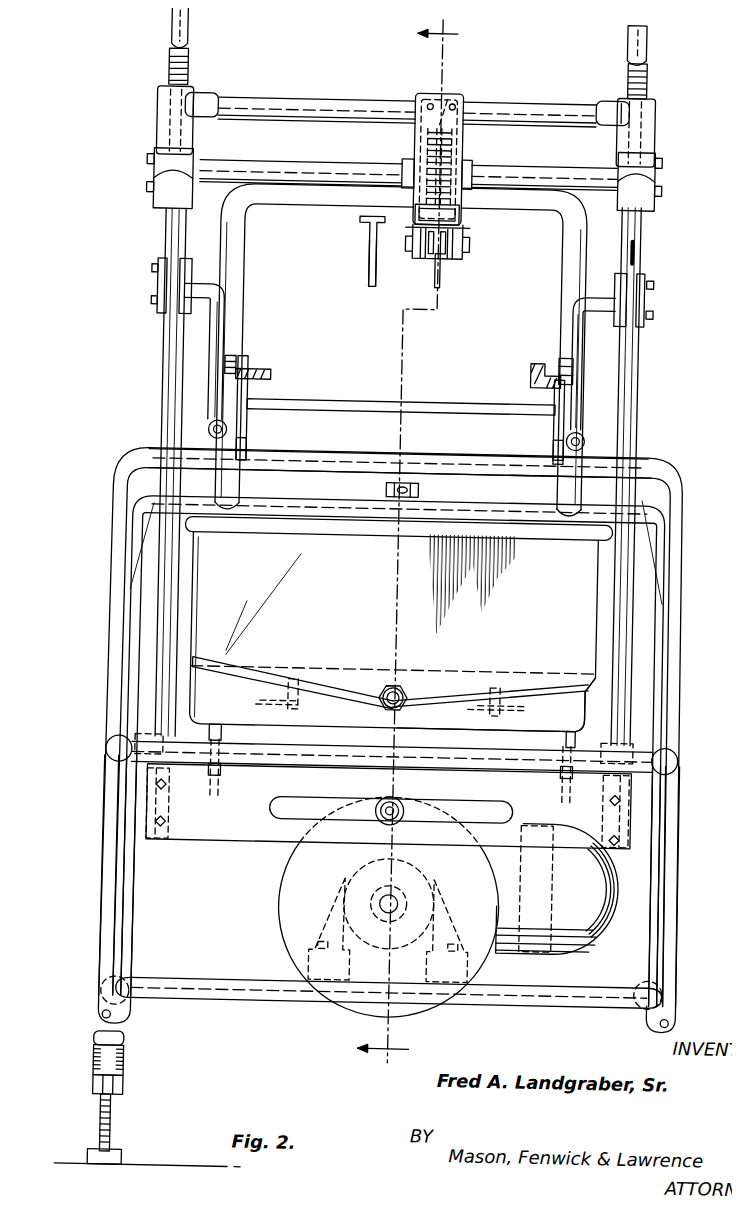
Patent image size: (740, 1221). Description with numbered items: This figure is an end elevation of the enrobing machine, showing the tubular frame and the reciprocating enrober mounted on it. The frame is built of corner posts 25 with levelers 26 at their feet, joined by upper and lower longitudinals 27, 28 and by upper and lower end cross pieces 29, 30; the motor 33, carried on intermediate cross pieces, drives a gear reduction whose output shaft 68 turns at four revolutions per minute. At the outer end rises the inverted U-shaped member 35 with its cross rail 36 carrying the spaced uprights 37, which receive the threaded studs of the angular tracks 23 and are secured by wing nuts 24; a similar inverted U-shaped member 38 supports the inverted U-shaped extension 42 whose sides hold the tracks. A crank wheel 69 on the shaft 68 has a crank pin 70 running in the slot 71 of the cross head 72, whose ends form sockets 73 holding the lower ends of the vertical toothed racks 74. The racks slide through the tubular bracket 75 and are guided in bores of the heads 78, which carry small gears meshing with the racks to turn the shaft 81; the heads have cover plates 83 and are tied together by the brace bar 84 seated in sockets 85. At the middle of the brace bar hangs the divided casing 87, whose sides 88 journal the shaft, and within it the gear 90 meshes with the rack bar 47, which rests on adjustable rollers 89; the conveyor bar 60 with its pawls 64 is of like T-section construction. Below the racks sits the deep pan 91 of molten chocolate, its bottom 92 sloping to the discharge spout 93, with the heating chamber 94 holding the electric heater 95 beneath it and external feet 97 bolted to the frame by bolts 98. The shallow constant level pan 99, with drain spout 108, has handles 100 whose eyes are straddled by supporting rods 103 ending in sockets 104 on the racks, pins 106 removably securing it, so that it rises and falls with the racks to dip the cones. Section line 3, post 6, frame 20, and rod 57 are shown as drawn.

The section line 3- 3 is at (397, 546).
The upright post 6 is at (640, 41).
The frame 20 is at (147, 951).
The angular tracks 23 is at (258, 371).
The wing nuts 24 is at (231, 353).
The corner posts 25 is at (105, 926).
The levelers 26 is at (122, 1133).
The upper longitudinals 27 is at (112, 769).
The lower longitudinals 28 is at (110, 995).
The upper end cross pieces 29 is at (520, 767).
The lower end cross pieces 30 is at (238, 984).
The motor 33 is at (597, 886).
The inverted U-shaped member 35 is at (108, 587).
The cross rail 36 is at (348, 452).
The uprights 37 is at (245, 393).
The inverted U-shaped member 38 is at (568, 776).
The inverted U-shaped extension 42 is at (237, 262).
The rack bar 47 is at (462, 228).
The rod 57 is at (428, 285).
The conveyor bar 60 is at (356, 222).
The unidirectionally swinging pawls 64 is at (362, 278).
The output shaft 68 is at (396, 900).
The crank wheel 69 is at (287, 902).
The crank pin 70 is at (398, 803).
The slot 71 is at (309, 817).
The cross head 72 is at (212, 844).
The sockets 73 is at (387, 821).
The toothed racks 74 is at (157, 72).
The tubular bracket 75 is at (150, 740).
The heads 78 is at (147, 110).
The shaft 81 is at (536, 166).
The cover plates 83 is at (145, 171).
The brace bar 84 is at (522, 100).
The sockets 85 is at (202, 97).
The divided casing 87 is at (446, 94).
The sides of the casing 88 is at (454, 149).
The adjustable rollers 89 is at (445, 249).
The gear 90 is at (452, 118).
The pan 91 is at (358, 587).
The bottom of the pan 92 is at (238, 694).
The discharge spout 93 is at (384, 692).
The heating chamber 94 is at (591, 711).
The electric heater 95 is at (522, 704).
The external feet 97 is at (222, 731).
The bolts 98 is at (217, 779).
The constant level pan 99 is at (451, 441).
The handles 100 is at (244, 443).
The supporting rods 103 is at (206, 334).
The sockets 104 is at (150, 297).
The pins 106 is at (224, 431).
The drain spout 108 is at (418, 490).